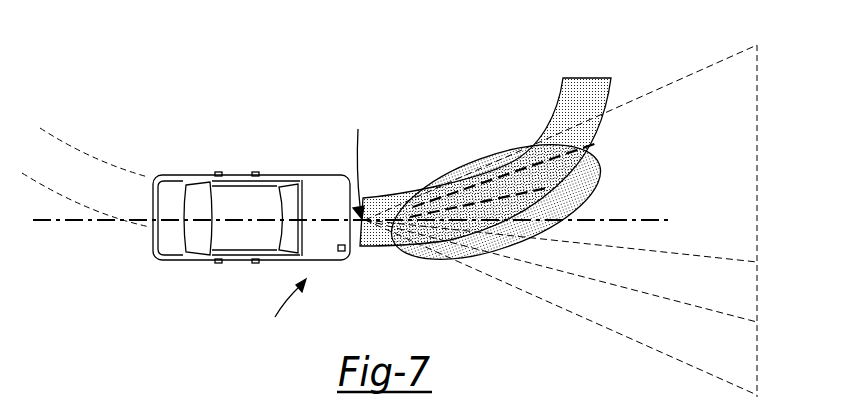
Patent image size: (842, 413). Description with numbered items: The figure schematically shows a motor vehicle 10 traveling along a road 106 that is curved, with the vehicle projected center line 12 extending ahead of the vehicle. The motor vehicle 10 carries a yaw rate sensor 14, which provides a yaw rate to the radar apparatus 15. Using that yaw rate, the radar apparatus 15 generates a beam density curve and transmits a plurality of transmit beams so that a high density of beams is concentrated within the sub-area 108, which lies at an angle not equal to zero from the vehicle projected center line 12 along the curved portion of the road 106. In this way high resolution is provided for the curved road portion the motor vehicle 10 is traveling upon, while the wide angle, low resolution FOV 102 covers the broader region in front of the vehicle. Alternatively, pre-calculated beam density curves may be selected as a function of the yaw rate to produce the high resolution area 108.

The motor vehicle 10 is at (263, 177).
The vehicle projected center line 12 is at (104, 223).
The yaw rate sensor 14 is at (347, 256).
The radar apparatus 15 is at (312, 221).
The wide angle, low resolution FOV 102 is at (745, 158).
The road 106 is at (563, 93).
The sub-area 108 is at (493, 152).